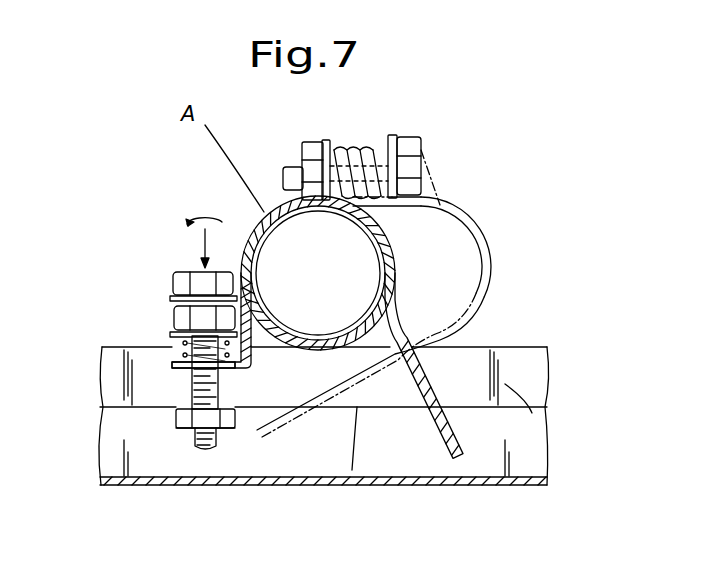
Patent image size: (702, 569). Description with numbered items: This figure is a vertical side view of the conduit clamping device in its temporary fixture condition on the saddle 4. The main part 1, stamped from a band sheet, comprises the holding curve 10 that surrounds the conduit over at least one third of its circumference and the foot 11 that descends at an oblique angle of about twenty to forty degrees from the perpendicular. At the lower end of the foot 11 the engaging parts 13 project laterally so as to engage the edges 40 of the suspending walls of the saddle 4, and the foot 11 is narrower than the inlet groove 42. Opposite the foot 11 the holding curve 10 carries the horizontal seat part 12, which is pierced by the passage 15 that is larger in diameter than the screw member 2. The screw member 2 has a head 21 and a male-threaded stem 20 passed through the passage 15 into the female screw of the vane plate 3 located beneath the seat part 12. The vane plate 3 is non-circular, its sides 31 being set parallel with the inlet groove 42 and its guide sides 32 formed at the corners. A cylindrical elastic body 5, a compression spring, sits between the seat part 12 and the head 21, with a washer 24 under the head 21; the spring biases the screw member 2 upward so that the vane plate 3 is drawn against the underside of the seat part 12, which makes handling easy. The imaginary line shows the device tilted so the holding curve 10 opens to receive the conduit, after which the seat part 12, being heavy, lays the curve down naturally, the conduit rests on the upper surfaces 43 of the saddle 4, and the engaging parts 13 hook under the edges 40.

The main part 1 is at (487, 250).
The screw member 2 is at (408, 158).
The vane plate 3 is at (305, 165).
The saddle 4 is at (541, 346).
The cylindrical elastic body 5 is at (362, 158).
The holding curve 10 is at (393, 253).
The foot 11 is at (422, 365).
The seat part 12 is at (326, 158).
The engaging parts 13 is at (422, 407).
The passage 15 is at (234, 372).
The stem 20 is at (389, 165).
The head 21 is at (428, 153).
The washer 24 is at (170, 333).
The sides 31 is at (227, 432).
The guide sides 32 is at (187, 443).
The edges 40 is at (357, 407).
The inlet groove 42 is at (532, 413).
The upper surfaces 43 is at (498, 352).